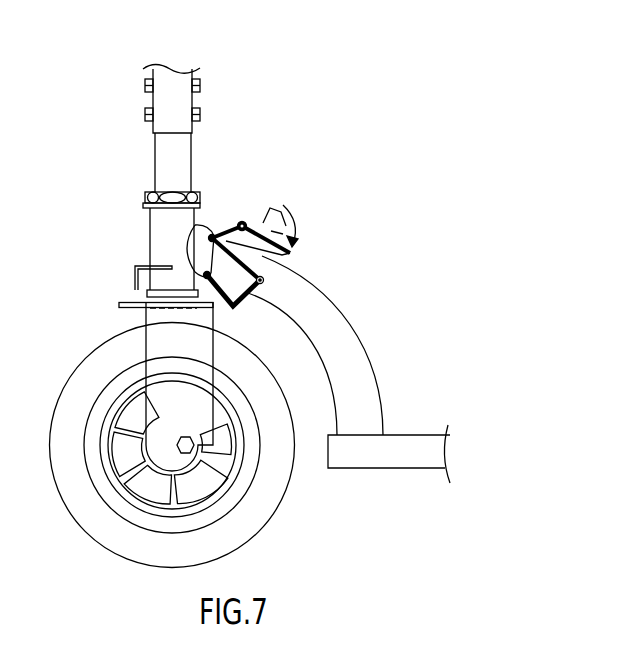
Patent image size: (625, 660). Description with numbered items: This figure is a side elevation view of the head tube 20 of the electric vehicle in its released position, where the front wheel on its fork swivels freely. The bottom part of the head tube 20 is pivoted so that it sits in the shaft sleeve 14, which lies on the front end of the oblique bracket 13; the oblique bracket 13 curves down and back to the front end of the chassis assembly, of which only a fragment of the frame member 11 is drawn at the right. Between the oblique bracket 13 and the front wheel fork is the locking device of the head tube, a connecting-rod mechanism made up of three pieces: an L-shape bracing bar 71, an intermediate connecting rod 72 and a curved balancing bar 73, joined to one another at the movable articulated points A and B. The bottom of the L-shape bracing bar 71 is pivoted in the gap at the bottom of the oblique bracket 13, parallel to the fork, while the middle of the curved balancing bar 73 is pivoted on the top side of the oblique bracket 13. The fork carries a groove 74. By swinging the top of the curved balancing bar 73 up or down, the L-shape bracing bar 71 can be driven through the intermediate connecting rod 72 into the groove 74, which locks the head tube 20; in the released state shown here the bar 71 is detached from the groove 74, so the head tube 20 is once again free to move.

The head tube 20 is at (183, 100).
The shaft sleeve 14 is at (160, 218).
The groove 74 is at (200, 320).
The curved balancing bar 73 is at (258, 212).
The intermediate connecting rod 72 is at (245, 262).
The L-shape bracing bar 71 is at (232, 303).
The oblique bracket 13 is at (352, 332).
The base frame 11 is at (425, 438).
The movable articulated point A is at (262, 281).
The movable articulated point B is at (208, 226).